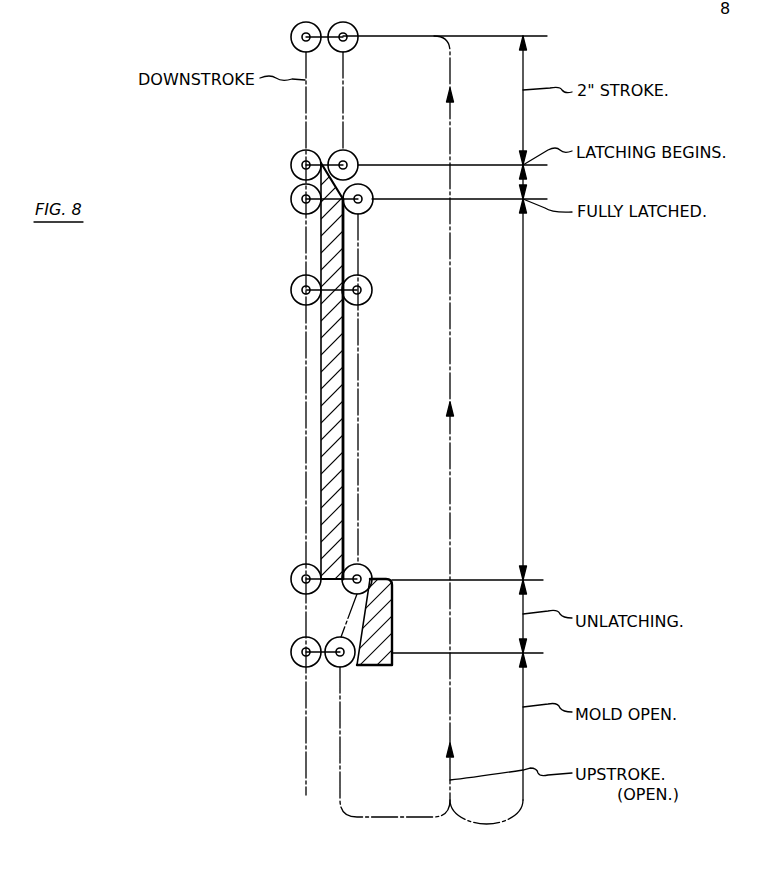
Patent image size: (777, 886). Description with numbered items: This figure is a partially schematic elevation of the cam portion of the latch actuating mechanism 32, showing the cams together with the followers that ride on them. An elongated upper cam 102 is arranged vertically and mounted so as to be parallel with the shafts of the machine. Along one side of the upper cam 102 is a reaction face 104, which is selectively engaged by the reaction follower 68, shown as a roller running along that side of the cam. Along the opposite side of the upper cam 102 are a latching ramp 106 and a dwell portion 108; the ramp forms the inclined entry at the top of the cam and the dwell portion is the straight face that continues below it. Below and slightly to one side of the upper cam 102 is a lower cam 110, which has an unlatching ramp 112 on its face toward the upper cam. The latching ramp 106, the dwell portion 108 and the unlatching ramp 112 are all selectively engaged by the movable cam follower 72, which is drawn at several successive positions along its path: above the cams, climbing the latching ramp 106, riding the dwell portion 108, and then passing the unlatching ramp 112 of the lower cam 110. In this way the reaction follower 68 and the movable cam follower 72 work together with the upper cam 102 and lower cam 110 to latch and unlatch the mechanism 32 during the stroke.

The latching mechanism 32 is at (290, 429).
The reaction follower 68 is at (293, 33).
The movable cam follower 72 is at (355, 28).
The upper cam 102 is at (312, 237).
The reaction face 104 is at (320, 385).
The latching ramp 106 is at (342, 186).
The dwell portion 108 is at (343, 380).
The lower cam 110 is at (400, 624).
The unlatching ramp 112 is at (365, 613).